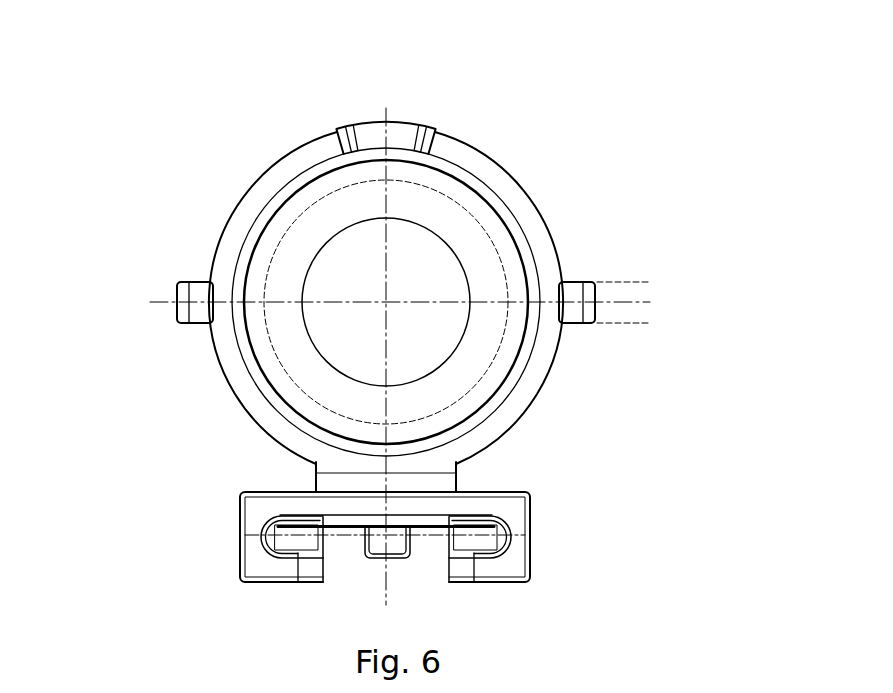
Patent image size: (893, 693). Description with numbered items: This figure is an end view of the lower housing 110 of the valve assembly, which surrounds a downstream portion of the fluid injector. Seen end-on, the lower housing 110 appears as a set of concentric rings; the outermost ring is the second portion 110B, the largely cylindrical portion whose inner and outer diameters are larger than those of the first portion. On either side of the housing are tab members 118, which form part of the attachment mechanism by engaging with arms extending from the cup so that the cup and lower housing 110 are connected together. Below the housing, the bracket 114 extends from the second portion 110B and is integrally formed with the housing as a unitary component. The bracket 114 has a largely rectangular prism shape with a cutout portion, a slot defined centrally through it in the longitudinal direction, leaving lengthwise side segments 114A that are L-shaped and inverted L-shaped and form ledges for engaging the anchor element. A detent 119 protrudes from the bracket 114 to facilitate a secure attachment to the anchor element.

The lower housing 110 is at (734, 103).
The second portion 110B is at (453, 150).
The bracket 114 is at (245, 512).
The lengthwise side segments 114A is at (252, 560).
The tab member 118 is at (177, 288).
The detent 119 is at (387, 550).